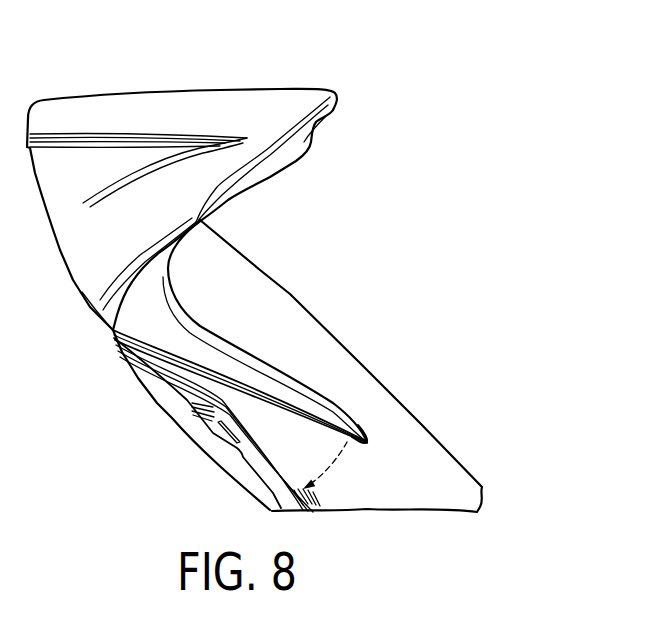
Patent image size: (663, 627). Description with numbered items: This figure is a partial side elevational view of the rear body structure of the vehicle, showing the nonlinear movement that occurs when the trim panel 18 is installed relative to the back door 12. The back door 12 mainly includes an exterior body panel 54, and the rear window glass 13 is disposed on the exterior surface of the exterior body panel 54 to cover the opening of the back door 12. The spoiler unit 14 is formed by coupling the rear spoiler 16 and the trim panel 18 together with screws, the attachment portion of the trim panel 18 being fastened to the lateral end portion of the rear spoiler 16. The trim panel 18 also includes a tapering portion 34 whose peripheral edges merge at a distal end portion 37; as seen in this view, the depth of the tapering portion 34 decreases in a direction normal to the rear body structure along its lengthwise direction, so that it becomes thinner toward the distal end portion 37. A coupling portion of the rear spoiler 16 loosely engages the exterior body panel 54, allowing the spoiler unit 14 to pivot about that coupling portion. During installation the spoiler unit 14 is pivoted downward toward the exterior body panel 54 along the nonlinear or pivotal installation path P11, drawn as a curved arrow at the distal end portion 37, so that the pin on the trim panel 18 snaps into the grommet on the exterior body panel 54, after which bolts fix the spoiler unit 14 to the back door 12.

The back door 12 is at (180, 442).
The rear window glass 13 is at (322, 348).
The spoiler unit 14 is at (352, 178).
The rear spoiler 16 is at (283, 103).
The trim panel 18 is at (228, 348).
The tapering portion 34 is at (320, 404).
The distal end portion 37 is at (358, 428).
The exterior body panel 54 is at (242, 466).
The installation path P11 is at (332, 465).